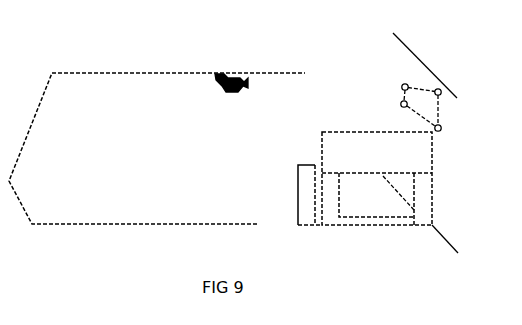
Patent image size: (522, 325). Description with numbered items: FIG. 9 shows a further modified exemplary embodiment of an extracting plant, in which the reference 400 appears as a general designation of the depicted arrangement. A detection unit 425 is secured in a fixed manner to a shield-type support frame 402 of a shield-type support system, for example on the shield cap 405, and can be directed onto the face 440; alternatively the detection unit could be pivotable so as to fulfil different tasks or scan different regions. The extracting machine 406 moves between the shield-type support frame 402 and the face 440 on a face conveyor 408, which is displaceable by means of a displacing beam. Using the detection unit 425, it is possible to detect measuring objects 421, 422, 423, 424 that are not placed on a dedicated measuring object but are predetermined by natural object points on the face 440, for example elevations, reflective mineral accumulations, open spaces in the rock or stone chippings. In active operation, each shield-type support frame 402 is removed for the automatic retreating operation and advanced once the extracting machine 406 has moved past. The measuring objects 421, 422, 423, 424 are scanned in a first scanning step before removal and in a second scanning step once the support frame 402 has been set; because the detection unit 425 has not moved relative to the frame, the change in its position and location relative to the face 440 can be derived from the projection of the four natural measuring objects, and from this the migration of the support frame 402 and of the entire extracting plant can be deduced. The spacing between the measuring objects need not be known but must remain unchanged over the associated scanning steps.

The battery cell / housing outline 400 is at (84, 55).
The shield-type support frame 402 is at (146, 60).
The shield cap 405 is at (283, 72).
The detection unit 425 is at (226, 100).
The face 440 is at (420, 67).
The measuring object 421 is at (403, 84).
The measuring object 422 is at (440, 88).
The measuring object 423 is at (441, 130).
The measuring object 424 is at (401, 107).
The extracting machine 406 is at (334, 136).
The face conveyor 408 is at (377, 224).